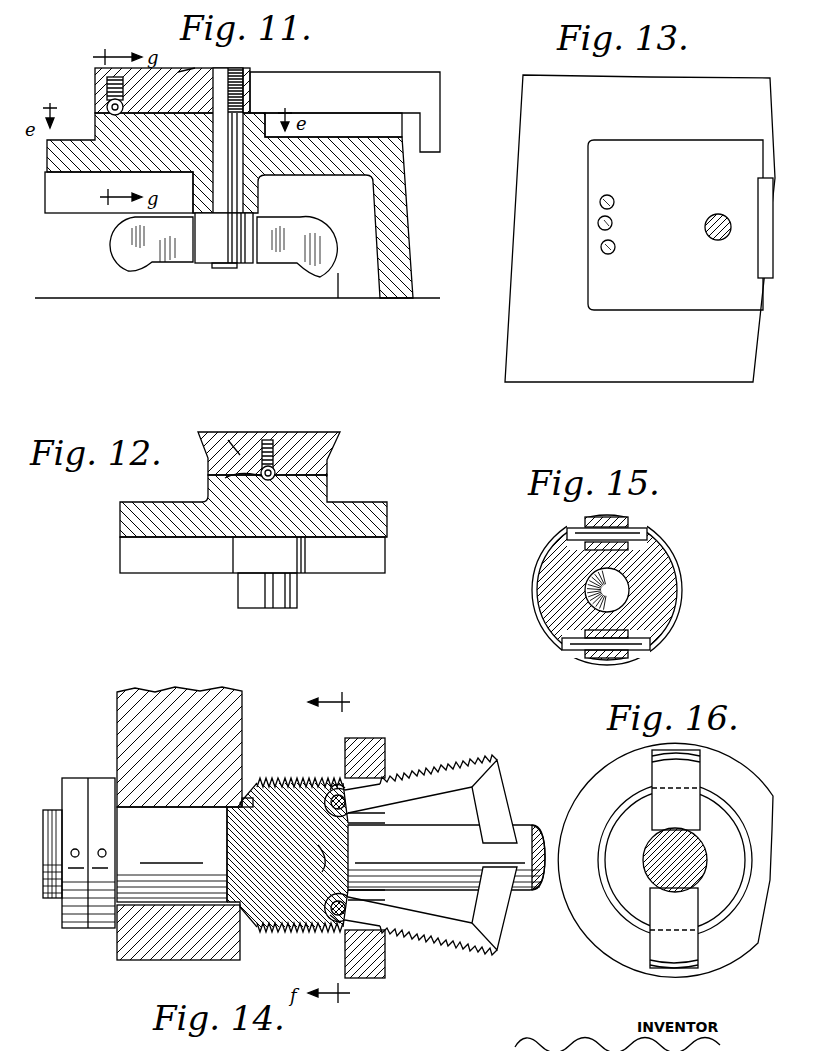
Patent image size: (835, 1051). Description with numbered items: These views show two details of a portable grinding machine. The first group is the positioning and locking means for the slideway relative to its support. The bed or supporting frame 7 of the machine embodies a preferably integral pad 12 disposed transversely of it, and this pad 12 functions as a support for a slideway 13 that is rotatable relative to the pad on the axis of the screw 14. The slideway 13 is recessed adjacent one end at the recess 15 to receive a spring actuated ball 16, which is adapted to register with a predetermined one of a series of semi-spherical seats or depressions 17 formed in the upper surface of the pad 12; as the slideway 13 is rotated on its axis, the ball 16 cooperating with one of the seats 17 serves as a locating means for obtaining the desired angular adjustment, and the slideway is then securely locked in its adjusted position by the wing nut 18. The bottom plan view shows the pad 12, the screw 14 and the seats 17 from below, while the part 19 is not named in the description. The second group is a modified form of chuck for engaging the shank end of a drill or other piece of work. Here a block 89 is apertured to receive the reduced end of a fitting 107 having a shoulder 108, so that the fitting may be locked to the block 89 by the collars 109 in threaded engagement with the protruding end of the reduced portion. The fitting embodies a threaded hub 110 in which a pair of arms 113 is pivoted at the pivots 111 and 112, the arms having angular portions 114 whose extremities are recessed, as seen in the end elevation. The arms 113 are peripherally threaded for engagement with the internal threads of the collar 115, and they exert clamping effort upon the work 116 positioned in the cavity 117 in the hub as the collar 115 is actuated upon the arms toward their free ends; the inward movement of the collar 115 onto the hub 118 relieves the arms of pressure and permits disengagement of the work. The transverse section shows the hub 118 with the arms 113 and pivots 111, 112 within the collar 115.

In FIG. 11, the bed or supporting frame 7 is at (332, 176).
In FIG. 13, the bed or supporting frame 7 is at (626, 375).
In FIG. 11, the pad 12 is at (97, 124).
In FIG. 13, the pad 12 is at (600, 312).
In FIG. 12, the pad 12 is at (330, 490).
In FIG. 11, the slideway 13 is at (178, 72).
In FIG. 12, the slideway 13 is at (236, 446).
In FIG. 11, the screw 14 is at (236, 135).
In FIG. 13, the screw 14 is at (705, 229).
In FIG. 11, the recess 15 is at (113, 78).
In FIG. 12, the recess 15 is at (276, 442).
In FIG. 11, the spring actuated ball 16 is at (105, 100).
In FIG. 12, the spring actuated ball 16 is at (258, 464).
In FIG. 13, the semi-spherical seats or depressions 17 is at (616, 201).
In FIG. 12, the semi-spherical seats or depressions 17 is at (240, 478).
In FIG. 11, the wing nut 18 is at (172, 255).
In FIG. 12, the wing nut 18 is at (300, 598).
In FIG. 12, the insert piece 19 is at (341, 436).
In FIG. 14, the block 89 is at (166, 702).
In FIG. 14, the fitting 107 is at (140, 950).
In FIG. 14, the shoulder 108 is at (243, 800).
In FIG. 14, the collars 109 is at (96, 778).
In FIG. 14, the threaded hub 110 is at (342, 786).
In FIG. 15, the pivot 111 is at (648, 649).
In FIG. 14, the pivot 111 is at (338, 794).
In FIG. 15, the pivot 112 is at (570, 523).
In FIG. 14, the pivot 112 is at (332, 920).
In FIG. 15, the arms 113 is at (612, 512).
In FIG. 14, the arms 113 is at (453, 768).
In FIG. 14, the angular portions 114 is at (510, 770).
In FIG. 16, the angular portions 114 is at (670, 810).
In FIG. 14, the collar 115 is at (388, 754).
In FIG. 16, the collar 115 is at (612, 948).
In FIG. 14, the work 116 is at (331, 854).
In FIG. 16, the work 116 is at (700, 848).
In FIG. 14, the cavity 117 is at (320, 850).
In FIG. 15, the hub 118 is at (660, 595).
In FIG. 14, the hub 118 is at (277, 788).